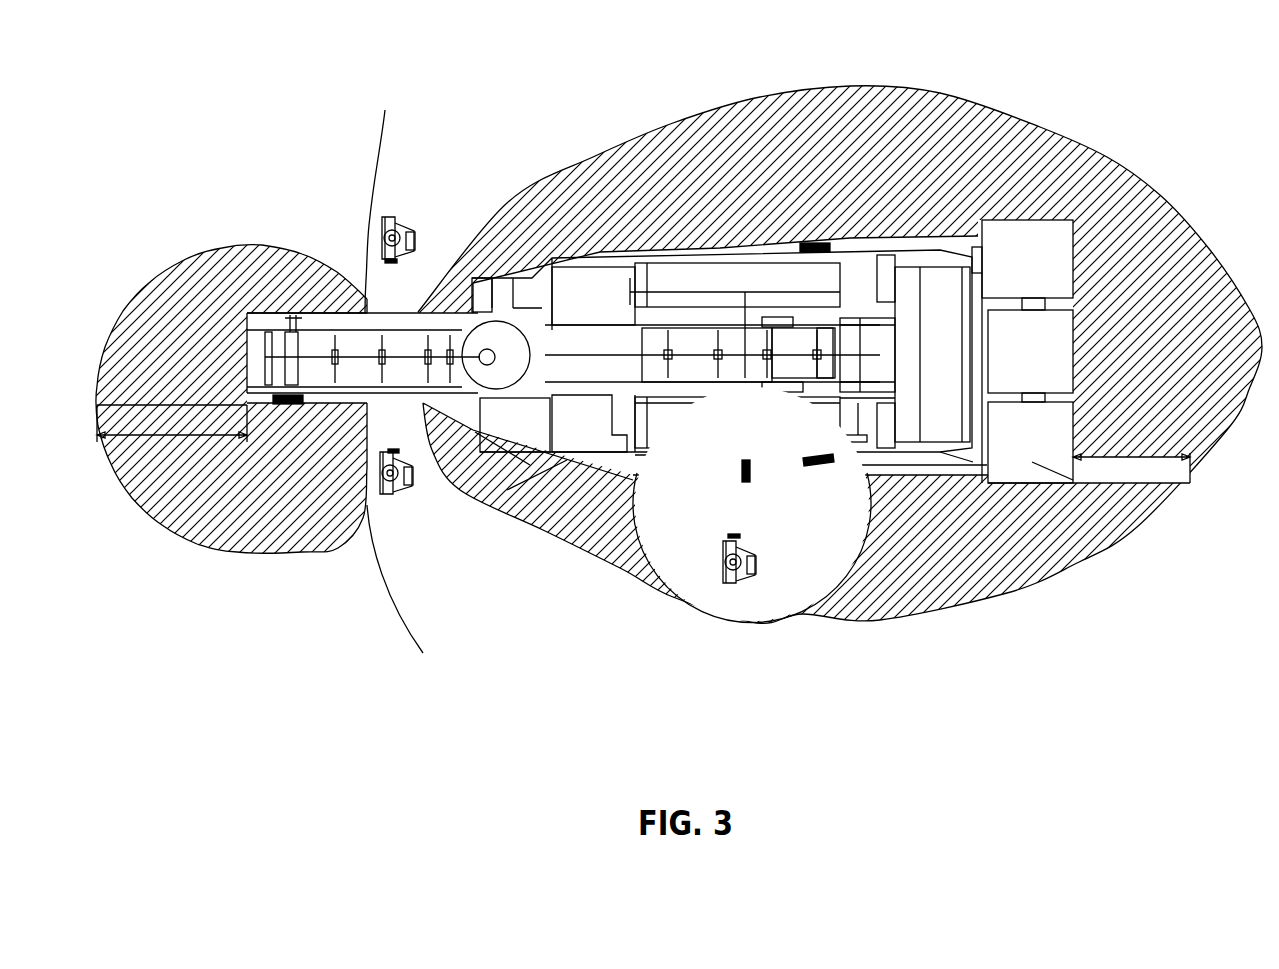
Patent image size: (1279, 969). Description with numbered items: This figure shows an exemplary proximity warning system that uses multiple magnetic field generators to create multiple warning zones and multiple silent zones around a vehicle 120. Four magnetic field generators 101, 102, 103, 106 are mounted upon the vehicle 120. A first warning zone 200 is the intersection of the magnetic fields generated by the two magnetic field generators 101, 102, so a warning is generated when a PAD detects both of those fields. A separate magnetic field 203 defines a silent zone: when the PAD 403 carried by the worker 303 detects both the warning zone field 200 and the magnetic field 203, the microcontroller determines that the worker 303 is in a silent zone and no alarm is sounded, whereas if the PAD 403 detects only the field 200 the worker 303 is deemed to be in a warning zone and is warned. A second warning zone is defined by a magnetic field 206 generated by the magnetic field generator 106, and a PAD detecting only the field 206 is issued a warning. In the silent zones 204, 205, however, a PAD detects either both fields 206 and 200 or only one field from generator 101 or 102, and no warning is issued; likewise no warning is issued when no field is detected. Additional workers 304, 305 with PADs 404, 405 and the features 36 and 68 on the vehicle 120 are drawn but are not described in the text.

The first warning zone 200 is at (1137, 525).
The magnetic field 206 is at (183, 518).
The silent zone 204 is at (450, 211).
The silent zone 205 is at (457, 528).
The magnetic field 203 is at (752, 505).
The vehicle 120 is at (609, 372).
The magnetic field generator 101 is at (803, 243).
The magnetic field generator 102 is at (830, 463).
The magnetic field generator 103 is at (748, 477).
The magnetic field generator 106 is at (280, 403).
The upper camera 304 is at (387, 217).
The upper camera indicator 404 is at (390, 259).
The lower left camera 305 is at (385, 490).
The lower left camera indicator 405 is at (392, 453).
The worker 303 is at (737, 585).
The PAD 403 is at (728, 540).
The housing wedge 36 is at (558, 465).
The end block 68 is at (1032, 462).